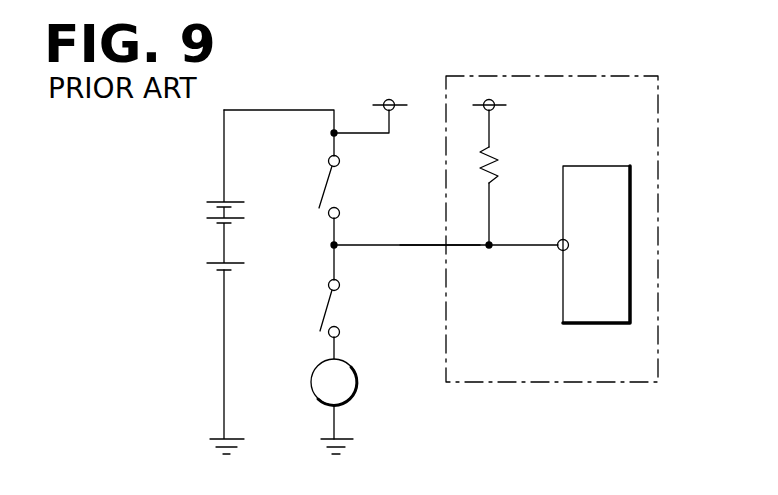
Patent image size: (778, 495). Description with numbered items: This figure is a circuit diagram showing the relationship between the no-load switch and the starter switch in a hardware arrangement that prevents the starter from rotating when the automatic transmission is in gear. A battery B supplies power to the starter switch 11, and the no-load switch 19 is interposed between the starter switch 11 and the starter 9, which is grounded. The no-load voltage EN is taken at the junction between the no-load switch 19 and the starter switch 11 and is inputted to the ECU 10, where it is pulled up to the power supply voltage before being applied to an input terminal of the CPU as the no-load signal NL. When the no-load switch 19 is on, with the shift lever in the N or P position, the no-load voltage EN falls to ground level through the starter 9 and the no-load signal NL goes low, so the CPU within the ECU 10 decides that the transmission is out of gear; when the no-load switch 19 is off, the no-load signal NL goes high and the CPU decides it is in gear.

The battery B is at (205, 218).
The starter switch 11 is at (347, 183).
The no-load voltage EN is at (400, 244).
The no-load switch 19 is at (348, 298).
The starter 9 is at (360, 380).
The no-load signal NL is at (521, 243).
The ECU 10 is at (530, 383).